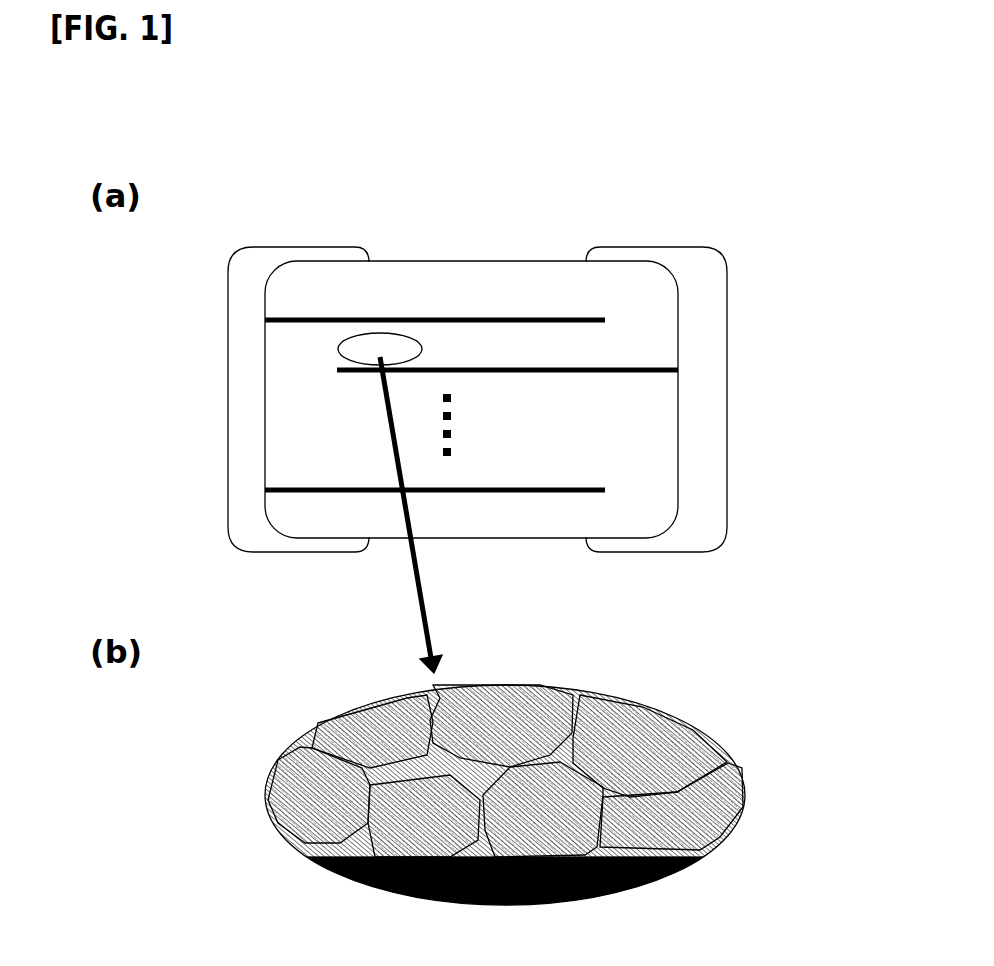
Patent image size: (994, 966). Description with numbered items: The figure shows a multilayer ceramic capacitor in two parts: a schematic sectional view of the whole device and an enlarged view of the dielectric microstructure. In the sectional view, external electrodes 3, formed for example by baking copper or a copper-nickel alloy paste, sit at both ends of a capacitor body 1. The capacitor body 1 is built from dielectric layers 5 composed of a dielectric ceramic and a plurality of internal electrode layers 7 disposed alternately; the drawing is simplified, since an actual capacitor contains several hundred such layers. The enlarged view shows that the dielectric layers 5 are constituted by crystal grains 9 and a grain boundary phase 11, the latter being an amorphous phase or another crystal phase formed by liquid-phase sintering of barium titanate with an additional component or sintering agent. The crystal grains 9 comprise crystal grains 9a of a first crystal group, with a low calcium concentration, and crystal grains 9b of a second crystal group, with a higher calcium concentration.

The capacitor body 1 is at (523, 343).
The external electrode 3 is at (713, 355).
The dielectric layer 5 is at (458, 345).
The internal electrode layer 7 is at (378, 342).
The crystal grains 9 is at (494, 787).
The crystal grains constituting a first crystal group 9a is at (308, 778).
The crystal grains constituting a second crystal group 9b is at (405, 800).
The grain boundary phase 11 is at (707, 843).